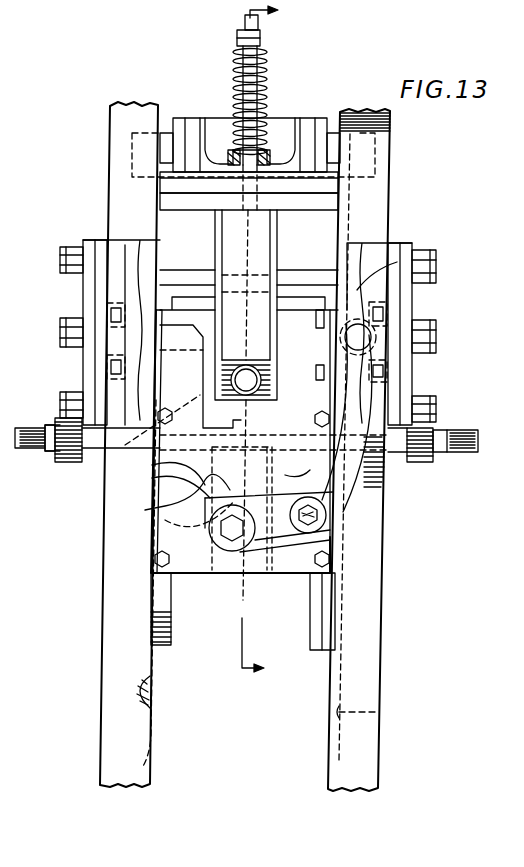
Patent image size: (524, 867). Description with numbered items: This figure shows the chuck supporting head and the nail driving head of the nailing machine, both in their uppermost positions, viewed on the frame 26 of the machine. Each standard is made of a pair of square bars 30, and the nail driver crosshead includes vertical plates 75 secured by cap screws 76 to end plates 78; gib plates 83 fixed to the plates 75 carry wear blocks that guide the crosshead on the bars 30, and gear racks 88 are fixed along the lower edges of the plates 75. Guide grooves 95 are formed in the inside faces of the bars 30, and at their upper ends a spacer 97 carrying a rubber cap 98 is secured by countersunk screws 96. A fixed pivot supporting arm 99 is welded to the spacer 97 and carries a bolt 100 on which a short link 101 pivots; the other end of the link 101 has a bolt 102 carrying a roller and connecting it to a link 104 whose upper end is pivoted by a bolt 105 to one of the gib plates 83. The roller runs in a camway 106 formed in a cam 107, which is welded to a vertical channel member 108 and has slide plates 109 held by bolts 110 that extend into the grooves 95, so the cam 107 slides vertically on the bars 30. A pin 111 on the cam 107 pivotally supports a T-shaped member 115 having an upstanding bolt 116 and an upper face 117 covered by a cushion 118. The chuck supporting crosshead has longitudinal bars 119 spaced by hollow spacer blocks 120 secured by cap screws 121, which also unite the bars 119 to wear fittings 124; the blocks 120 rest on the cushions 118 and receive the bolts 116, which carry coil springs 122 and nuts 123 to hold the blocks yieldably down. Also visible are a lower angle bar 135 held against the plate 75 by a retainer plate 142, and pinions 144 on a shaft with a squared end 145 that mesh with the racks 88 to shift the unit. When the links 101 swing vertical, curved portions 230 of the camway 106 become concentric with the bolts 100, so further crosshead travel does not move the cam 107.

The frame 26 is at (273, 347).
The bars 30 is at (112, 165).
The vertical plates 75 is at (90, 355).
The cap screws 76 is at (60, 261).
The end plates 78 is at (127, 436).
The vertical plates 83 is at (147, 245).
The gear racks 88 is at (438, 413).
The guide grooves 95 is at (152, 690).
The countersunk screws 96 is at (108, 315).
The spacer 97 is at (293, 298).
The rubber cap 98 is at (186, 288).
The fixed pivot supporting arm 99 is at (190, 417).
The bolt 100 is at (236, 543).
The short link 101 is at (284, 506).
The bolt 102 is at (326, 519).
The link 104 is at (372, 474).
The bolt 105 is at (373, 344).
The camway 106 is at (238, 495).
The cam 107 is at (269, 441).
The vertical channel member 108 is at (291, 479).
The slide plates 109 is at (171, 604).
The bolts 110 is at (318, 410).
The pin 111 is at (249, 377).
The T-shaped member 115 is at (286, 218).
The bolt 116 is at (259, 28).
The upper face 117 is at (338, 201).
The cushion 118 is at (338, 186).
The longitudinal bars 119 is at (178, 120).
The hollow spacer blocks 120 is at (272, 126).
The cap screws 121 is at (221, 160).
The coil springs 122 is at (268, 86).
The nuts 123 is at (262, 50).
The wear fittings 124 is at (163, 137).
The lower angle bar 135 is at (95, 478).
The retainer plate 142 is at (55, 425).
The pinions 144 is at (70, 463).
The squared end 145 is at (18, 448).
The curved portions 230 is at (148, 511).